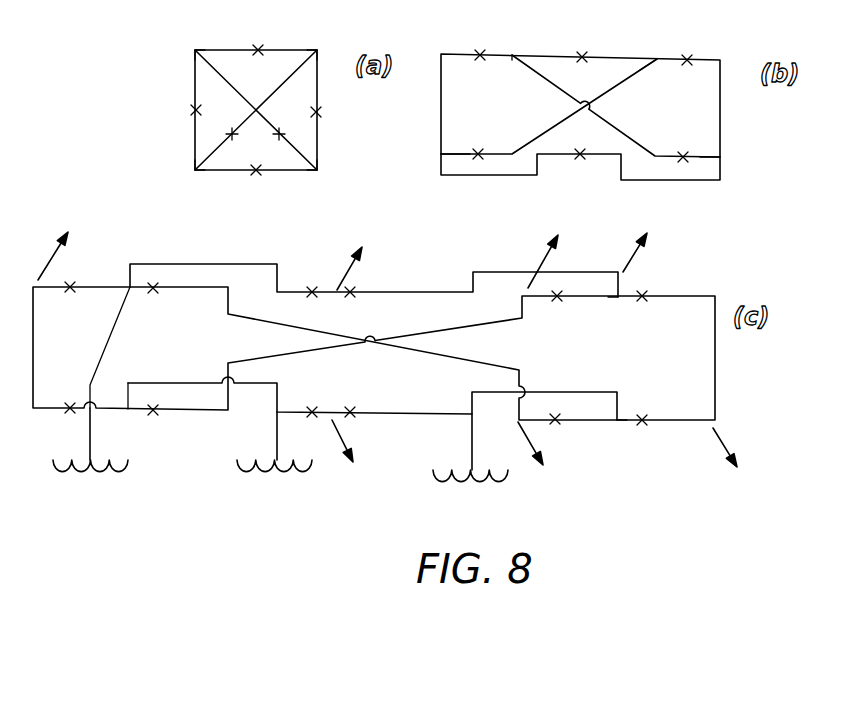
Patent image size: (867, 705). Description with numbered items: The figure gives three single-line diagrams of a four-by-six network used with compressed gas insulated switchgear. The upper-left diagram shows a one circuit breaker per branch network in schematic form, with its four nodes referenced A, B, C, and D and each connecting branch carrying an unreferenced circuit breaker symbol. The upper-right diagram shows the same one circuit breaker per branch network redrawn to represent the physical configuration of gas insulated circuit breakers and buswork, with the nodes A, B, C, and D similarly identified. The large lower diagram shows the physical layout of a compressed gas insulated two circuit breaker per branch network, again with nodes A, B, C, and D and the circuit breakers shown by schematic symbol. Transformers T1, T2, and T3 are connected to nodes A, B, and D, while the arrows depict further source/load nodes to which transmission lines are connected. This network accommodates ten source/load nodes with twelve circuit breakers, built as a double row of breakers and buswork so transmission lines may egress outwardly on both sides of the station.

The node A is at (195, 170).
The node B is at (195, 50).
The node C is at (317, 50).
The node D is at (317, 170).
The transformer T1 is at (78, 473).
The transformer T2 is at (266, 473).
The transformer T3 is at (475, 483).